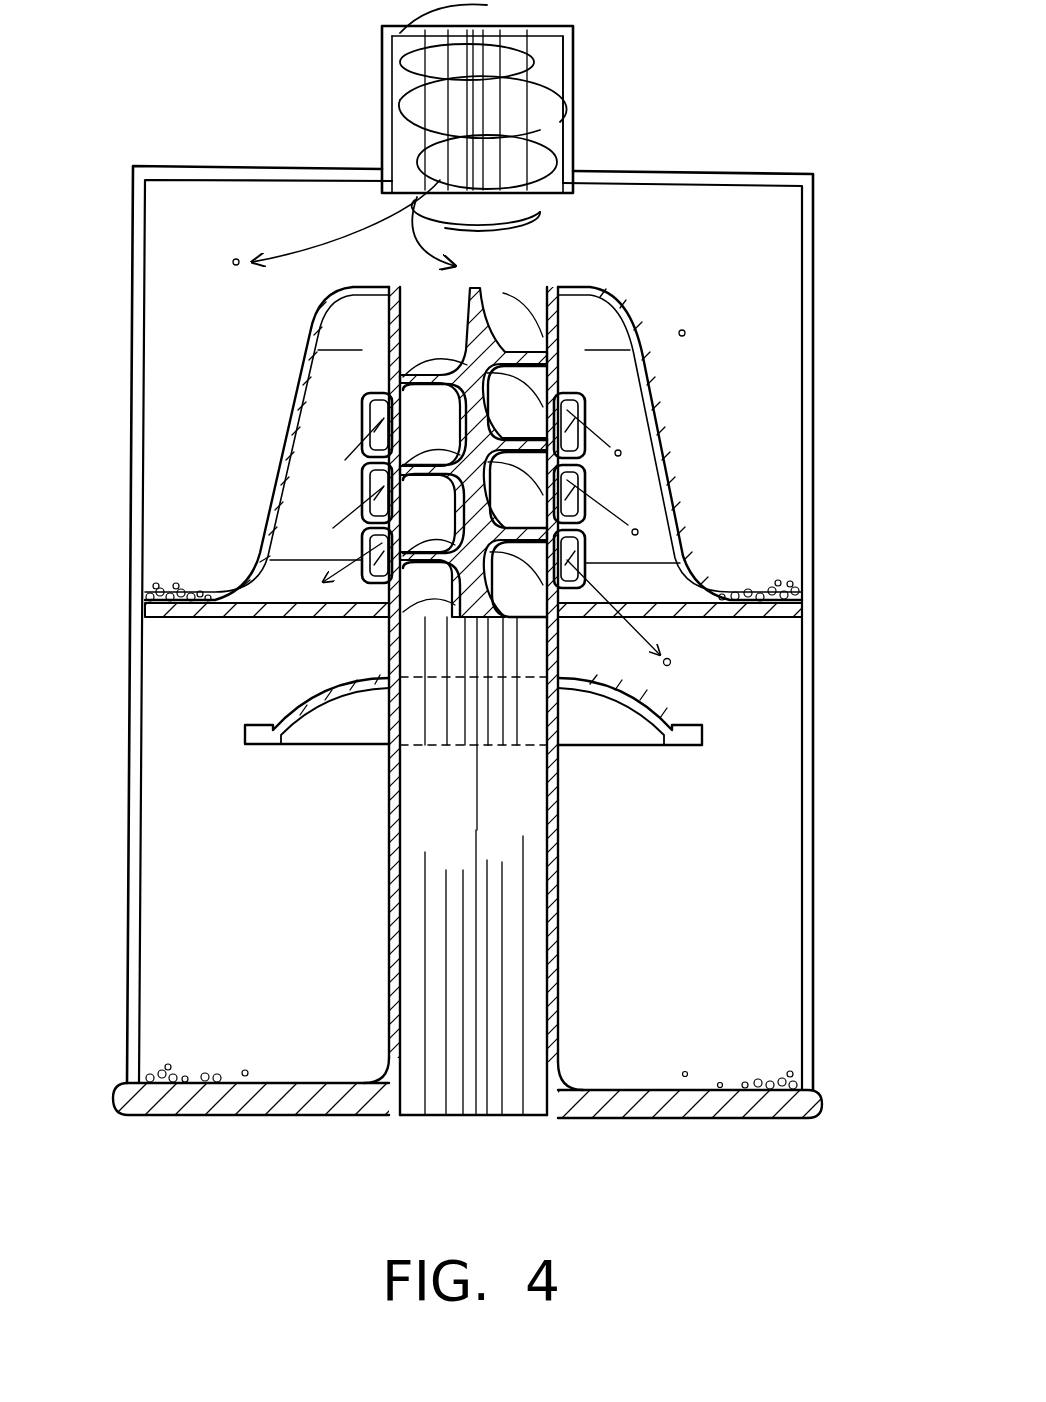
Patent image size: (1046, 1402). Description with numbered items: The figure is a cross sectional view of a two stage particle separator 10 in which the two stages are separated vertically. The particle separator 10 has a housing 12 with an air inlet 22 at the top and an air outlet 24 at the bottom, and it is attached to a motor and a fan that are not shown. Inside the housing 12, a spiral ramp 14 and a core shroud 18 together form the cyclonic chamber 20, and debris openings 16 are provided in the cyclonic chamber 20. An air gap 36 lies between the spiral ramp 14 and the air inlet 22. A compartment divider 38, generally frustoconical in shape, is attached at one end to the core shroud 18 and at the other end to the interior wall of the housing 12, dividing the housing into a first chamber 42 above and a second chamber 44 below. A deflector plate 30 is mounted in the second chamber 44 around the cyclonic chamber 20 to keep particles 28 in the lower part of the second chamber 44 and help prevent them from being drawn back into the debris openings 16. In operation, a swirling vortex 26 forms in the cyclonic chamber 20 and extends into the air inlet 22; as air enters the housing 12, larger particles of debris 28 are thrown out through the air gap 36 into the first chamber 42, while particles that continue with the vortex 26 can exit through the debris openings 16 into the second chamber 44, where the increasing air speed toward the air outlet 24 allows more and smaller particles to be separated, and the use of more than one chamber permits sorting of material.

The two stage particle separator 10 is at (770, 126).
The housing 12 is at (812, 556).
The spiral ramp 14 is at (570, 222).
The debris openings 16 is at (347, 455).
The core shroud 18 is at (387, 325).
The cyclonic chamber 20 is at (432, 1122).
The air inlet 22 is at (407, 40).
The air outlet 24 is at (508, 1097).
The swirling air flow 26 is at (550, 112).
The particles 28 is at (236, 259).
The deflector plate 30 is at (702, 731).
The air gap 36 is at (588, 218).
The compartment divider 38 is at (665, 432).
The first chamber 42 is at (170, 362).
The second chamber 44 is at (770, 980).